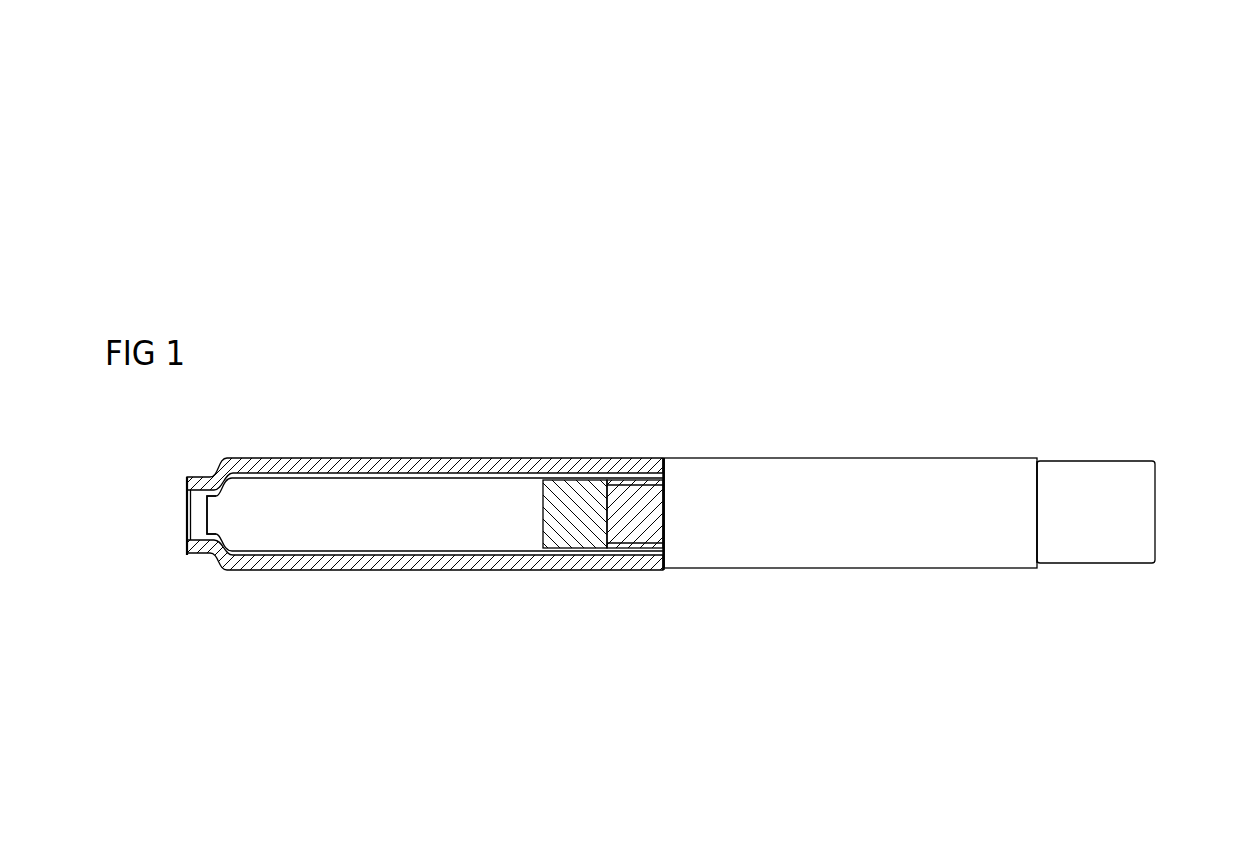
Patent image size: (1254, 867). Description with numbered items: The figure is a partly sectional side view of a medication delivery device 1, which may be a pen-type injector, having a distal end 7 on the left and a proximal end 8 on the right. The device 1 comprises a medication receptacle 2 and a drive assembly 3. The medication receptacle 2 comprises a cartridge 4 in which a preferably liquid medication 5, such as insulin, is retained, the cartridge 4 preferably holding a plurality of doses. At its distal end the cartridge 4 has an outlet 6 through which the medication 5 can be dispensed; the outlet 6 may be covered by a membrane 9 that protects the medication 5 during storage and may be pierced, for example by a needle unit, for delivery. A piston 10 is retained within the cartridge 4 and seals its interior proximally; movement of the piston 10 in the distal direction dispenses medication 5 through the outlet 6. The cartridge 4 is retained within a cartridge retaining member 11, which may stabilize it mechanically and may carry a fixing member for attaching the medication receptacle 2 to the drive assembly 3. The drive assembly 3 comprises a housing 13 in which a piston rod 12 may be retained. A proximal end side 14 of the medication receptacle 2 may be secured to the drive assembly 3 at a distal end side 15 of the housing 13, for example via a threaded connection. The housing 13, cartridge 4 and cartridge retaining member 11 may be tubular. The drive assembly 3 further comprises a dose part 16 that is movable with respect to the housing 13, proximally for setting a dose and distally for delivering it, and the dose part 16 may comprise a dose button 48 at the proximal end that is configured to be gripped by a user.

The medication delivery device 1 is at (937, 390).
The medication receptacle 2 is at (450, 600).
The drive assembly 3 is at (860, 598).
The cartridge 4 is at (482, 478).
The medication 5 is at (430, 492).
The outlet 6 is at (218, 513).
The distal end 7 is at (172, 514).
The proximal end 8 is at (1172, 505).
The membrane 9 is at (200, 527).
The piston 10 is at (578, 490).
The cartridge retaining member 11 is at (522, 467).
The piston rod 12 is at (640, 492).
The housing 13 is at (823, 468).
The proximal end side 14 is at (660, 568).
The distal end side 15 is at (668, 460).
The dose part 16 is at (1103, 475).
The dose button 48 is at (1072, 535).